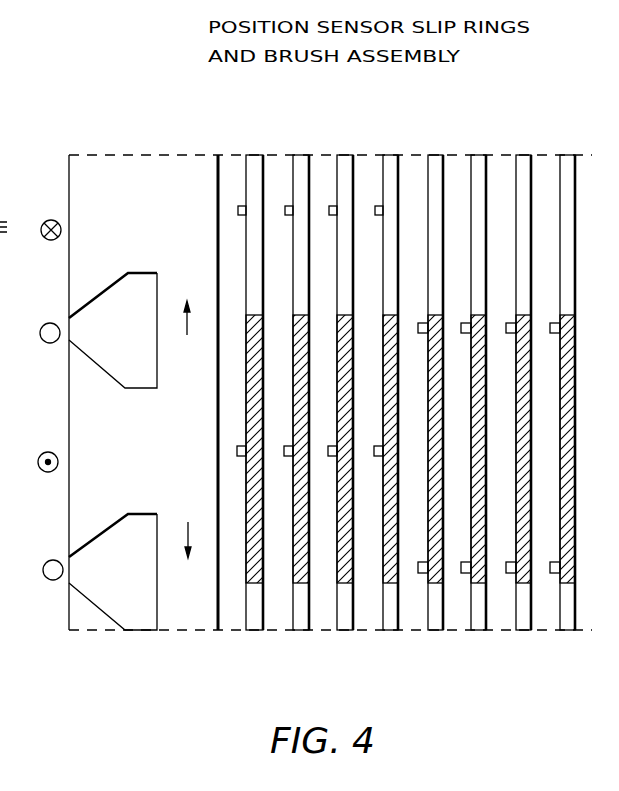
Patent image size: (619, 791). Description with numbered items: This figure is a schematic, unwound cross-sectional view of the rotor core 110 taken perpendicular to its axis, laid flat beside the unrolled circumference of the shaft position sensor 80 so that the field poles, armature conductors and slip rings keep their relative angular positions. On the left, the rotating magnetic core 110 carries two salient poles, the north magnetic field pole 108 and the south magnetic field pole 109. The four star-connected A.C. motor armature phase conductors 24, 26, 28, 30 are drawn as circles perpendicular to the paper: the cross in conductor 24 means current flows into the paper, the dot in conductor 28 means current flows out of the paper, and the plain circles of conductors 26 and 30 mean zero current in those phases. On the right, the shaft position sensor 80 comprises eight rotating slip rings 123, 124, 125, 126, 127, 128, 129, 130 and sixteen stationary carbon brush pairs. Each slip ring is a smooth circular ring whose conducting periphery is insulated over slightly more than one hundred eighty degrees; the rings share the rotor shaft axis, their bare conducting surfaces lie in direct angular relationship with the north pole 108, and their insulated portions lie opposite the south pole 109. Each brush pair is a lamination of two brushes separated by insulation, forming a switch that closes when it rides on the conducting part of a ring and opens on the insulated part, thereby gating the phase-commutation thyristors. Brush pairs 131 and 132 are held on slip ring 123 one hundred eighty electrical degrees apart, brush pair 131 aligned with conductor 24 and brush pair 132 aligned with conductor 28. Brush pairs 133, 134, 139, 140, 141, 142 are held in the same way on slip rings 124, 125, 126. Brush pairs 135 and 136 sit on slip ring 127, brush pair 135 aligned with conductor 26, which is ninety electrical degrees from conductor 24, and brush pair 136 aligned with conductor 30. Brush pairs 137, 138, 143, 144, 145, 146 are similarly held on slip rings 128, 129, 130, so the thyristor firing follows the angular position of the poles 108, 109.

The A.C. motor armature phase conductor 24 is at (55, 241).
The A.C. motor armature phase conductor 26 is at (42, 342).
The A.C. motor armature phase conductor 28 is at (41, 470).
The A.C. motor armature phase conductor 30 is at (53, 581).
The shaft position sensor 80 is at (395, 689).
The north magnetic field pole 108 is at (69, 258).
The south magnetic field pole 109 is at (95, 393).
The magnetic core 110 is at (190, 429).
The slip ring 123 is at (252, 155).
The slip ring 124 is at (300, 155).
The slip ring 125 is at (346, 155).
The slip ring 126 is at (390, 155).
The slip ring 127 is at (435, 155).
The slip ring 128 is at (478, 155).
The slip ring 129 is at (523, 155).
The slip ring 130 is at (567, 155).
The brush pair 131 is at (238, 206).
The brush pair 132 is at (237, 451).
The brush pair 133 is at (284, 453).
The brush pair 134 is at (285, 206).
The brush pair 135 is at (413, 322).
The brush pair 136 is at (421, 574).
The brush pair 137 is at (465, 574).
The brush pair 138 is at (458, 325).
The brush pair 139 is at (329, 206).
The brush pair 140 is at (331, 446).
The brush pair 141 is at (377, 446).
The brush pair 142 is at (375, 206).
The brush pair 143 is at (505, 325).
The brush pair 144 is at (510, 574).
The brush pair 145 is at (555, 574).
The brush pair 146 is at (552, 331).